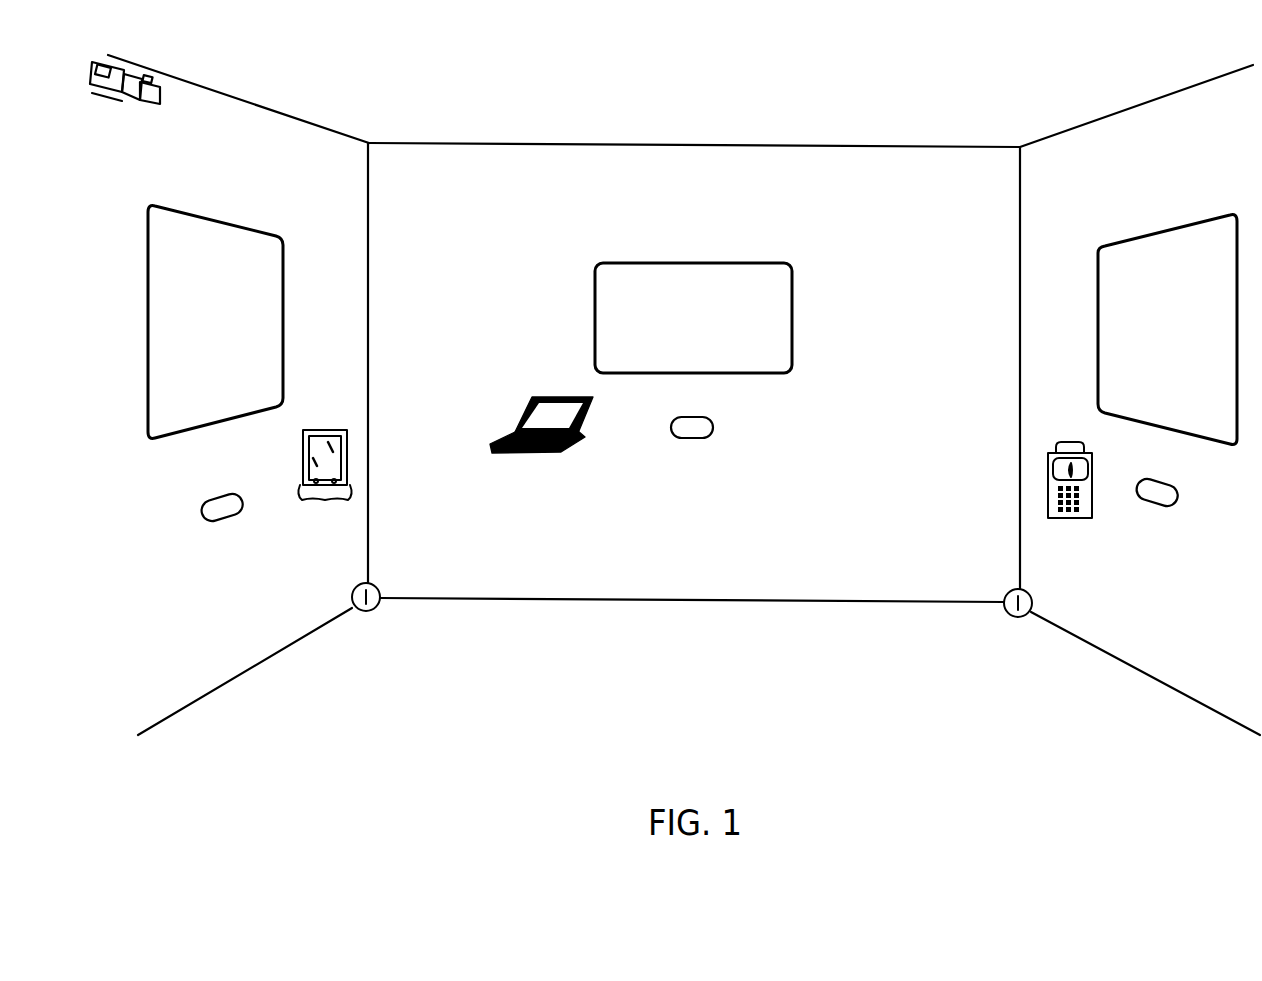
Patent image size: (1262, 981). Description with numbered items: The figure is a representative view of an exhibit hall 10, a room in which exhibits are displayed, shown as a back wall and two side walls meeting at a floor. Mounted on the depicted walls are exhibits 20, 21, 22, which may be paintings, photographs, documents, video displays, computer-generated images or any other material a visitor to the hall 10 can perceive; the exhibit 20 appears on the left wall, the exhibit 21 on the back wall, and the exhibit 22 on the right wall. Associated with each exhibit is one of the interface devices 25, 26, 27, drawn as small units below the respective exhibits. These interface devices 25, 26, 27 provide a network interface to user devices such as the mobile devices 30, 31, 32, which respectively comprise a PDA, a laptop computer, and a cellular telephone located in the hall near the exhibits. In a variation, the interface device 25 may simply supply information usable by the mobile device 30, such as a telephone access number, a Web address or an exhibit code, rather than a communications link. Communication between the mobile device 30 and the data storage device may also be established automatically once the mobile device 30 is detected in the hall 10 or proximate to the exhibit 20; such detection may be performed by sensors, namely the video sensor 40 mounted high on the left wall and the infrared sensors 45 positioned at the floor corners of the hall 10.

The exhibit hall 10 is at (803, 124).
The exhibit 20 is at (218, 217).
The exhibit 21 is at (692, 263).
The exhibit 22 is at (1168, 228).
The interface device 25 is at (213, 498).
The interface device 26 is at (690, 439).
The interface device 27 is at (1157, 506).
The mobile device 30 is at (331, 430).
The mobile device 31 is at (523, 413).
The mobile device 32 is at (1050, 455).
The video sensor 40 is at (97, 103).
The infrared sensors 45 is at (380, 590).